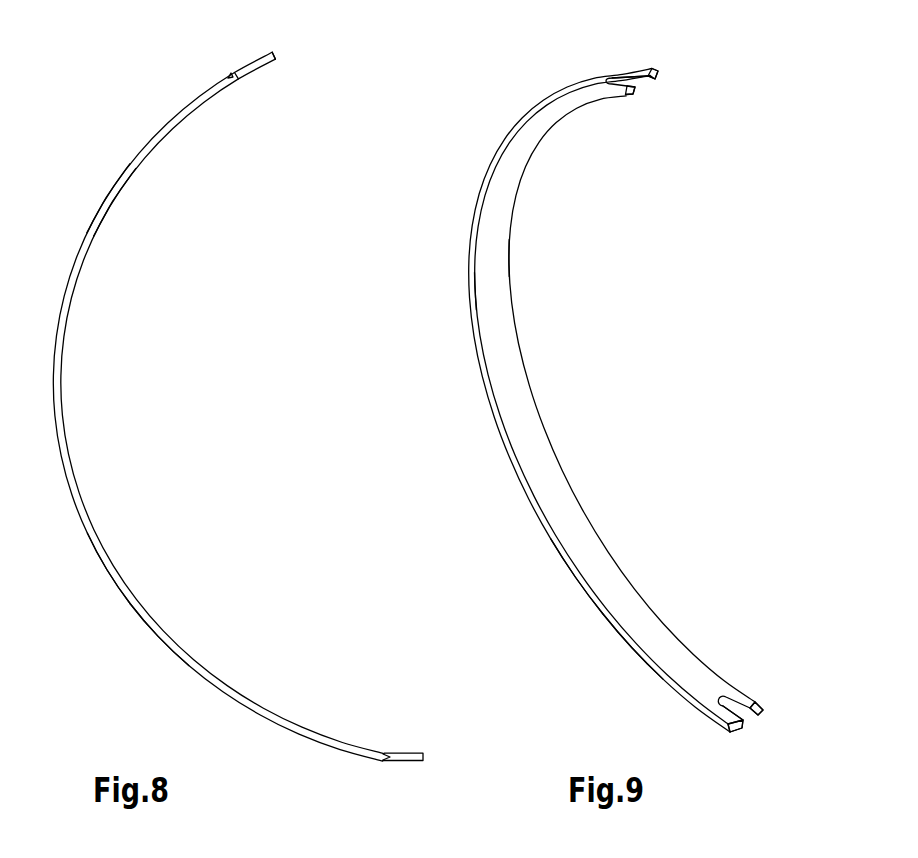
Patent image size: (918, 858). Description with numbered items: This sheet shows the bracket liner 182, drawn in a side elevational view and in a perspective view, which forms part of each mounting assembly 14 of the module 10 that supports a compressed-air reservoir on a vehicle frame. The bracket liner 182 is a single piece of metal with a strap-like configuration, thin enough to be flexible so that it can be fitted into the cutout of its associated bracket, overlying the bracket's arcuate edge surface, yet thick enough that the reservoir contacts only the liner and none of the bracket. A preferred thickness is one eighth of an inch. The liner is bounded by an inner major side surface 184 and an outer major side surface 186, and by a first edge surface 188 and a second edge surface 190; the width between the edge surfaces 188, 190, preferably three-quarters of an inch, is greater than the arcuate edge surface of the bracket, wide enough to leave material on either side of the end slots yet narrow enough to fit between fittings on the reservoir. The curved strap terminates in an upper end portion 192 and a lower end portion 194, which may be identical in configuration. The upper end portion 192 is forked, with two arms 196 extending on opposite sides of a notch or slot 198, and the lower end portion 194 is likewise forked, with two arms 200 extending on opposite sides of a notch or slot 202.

In FIG. 8, the module 10 is at (92, 627).
In FIG. 9, the module 10 is at (663, 350).
In FIG. 8, the mounting assembly 14 is at (122, 676).
In FIG. 9, the mounting assembly 14 is at (682, 389).
In FIG. 8, the bracket liner 182 is at (72, 443).
In FIG. 9, the bracket liner 182 is at (578, 475).
In FIG. 8, the inner major side surface 184 is at (87, 249).
In FIG. 8, the outer major side surface 186 is at (89, 232).
In FIG. 9, the first edge surface 188 is at (478, 340).
In FIG. 9, the second edge surface 190 is at (510, 241).
In FIG. 8, the upper end portion 192 is at (252, 68).
In FIG. 9, the upper end portion 192 is at (586, 81).
In FIG. 8, the lower end portion 194 is at (402, 752).
In FIG. 9, the lower end portion 194 is at (697, 690).
In FIG. 9, the arms 196 is at (657, 70).
In FIG. 8, the slot 198 is at (230, 74).
In FIG. 9, the slot 198 is at (650, 85).
In FIG. 9, the arms 200 is at (763, 709).
In FIG. 8, the slot 202 is at (390, 761).
In FIG. 9, the slot 202 is at (744, 718).